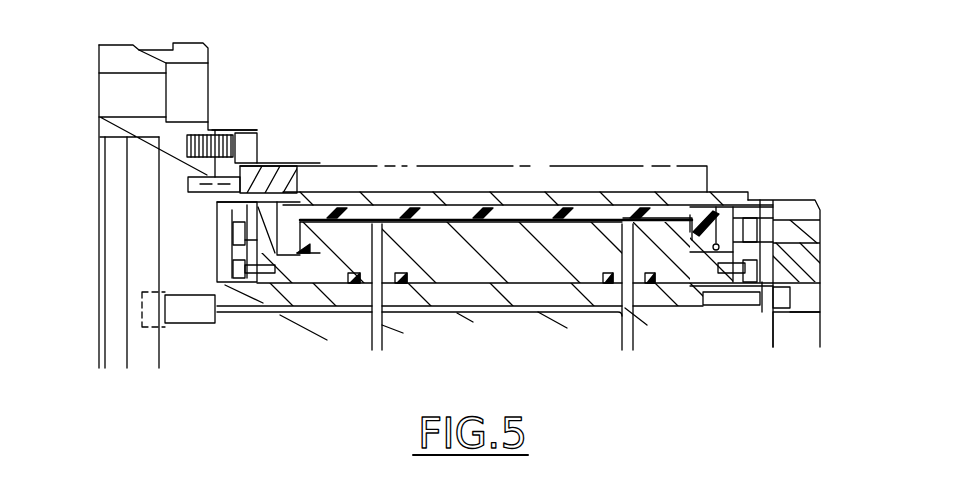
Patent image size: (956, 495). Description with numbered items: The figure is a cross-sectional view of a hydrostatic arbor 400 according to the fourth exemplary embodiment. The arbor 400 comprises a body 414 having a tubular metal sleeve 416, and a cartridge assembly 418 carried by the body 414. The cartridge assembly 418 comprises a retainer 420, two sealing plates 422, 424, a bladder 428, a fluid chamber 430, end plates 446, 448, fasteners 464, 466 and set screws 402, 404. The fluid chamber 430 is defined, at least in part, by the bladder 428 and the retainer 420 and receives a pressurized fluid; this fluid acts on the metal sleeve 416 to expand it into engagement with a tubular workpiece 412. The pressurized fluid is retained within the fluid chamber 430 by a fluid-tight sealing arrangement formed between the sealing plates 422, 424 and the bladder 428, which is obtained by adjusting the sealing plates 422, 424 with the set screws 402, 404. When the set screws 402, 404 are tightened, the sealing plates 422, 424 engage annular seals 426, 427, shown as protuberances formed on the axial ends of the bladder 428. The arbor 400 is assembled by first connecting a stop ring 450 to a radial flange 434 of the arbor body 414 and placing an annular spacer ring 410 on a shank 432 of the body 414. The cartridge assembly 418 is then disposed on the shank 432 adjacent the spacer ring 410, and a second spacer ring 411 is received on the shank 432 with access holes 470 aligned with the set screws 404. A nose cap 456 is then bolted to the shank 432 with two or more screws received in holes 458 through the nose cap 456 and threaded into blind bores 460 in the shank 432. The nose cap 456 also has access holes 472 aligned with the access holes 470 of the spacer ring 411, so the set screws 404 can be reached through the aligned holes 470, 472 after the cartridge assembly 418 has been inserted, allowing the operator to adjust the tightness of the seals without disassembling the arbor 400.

The hydrostatic arbor 400 is at (650, 72).
The set screw 402 is at (237, 232).
The set screw 404 is at (753, 222).
The annular spacer ring 410 is at (217, 276).
The second spacer ring 411 is at (762, 320).
The tubular workpiece 412 is at (433, 172).
The body 414 is at (150, 273).
The tubular metal sleeve 416 is at (588, 193).
The cartridge assembly 418 is at (527, 197).
The retainer 420 is at (510, 273).
The sealing plate 422 is at (276, 256).
The sealing plate 424 is at (640, 303).
The annular seal 426 is at (305, 197).
The annular seal 427 is at (718, 228).
The bladder 428 is at (358, 197).
The fluid chamber 430 is at (467, 197).
The shank 432 is at (625, 325).
The radial flange 434 is at (131, 53).
The end plate 446 is at (223, 338).
The end plate 448 is at (716, 255).
The stop ring 450 is at (167, 177).
The nose cap 456 is at (812, 327).
The holes 458 is at (793, 318).
The blind bores 460 is at (755, 285).
The fastener 464 is at (237, 268).
The fastener 466 is at (745, 278).
The access holes 470 is at (795, 200).
The access holes 472 is at (812, 296).